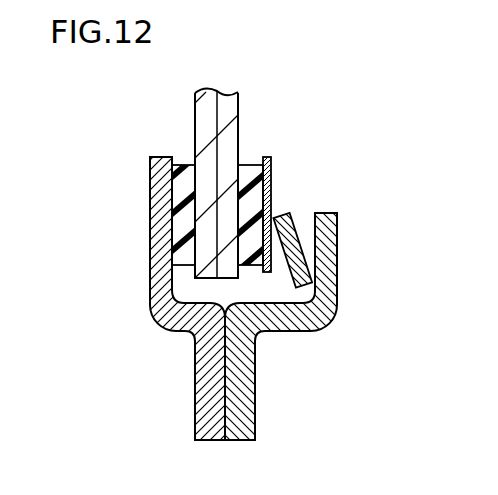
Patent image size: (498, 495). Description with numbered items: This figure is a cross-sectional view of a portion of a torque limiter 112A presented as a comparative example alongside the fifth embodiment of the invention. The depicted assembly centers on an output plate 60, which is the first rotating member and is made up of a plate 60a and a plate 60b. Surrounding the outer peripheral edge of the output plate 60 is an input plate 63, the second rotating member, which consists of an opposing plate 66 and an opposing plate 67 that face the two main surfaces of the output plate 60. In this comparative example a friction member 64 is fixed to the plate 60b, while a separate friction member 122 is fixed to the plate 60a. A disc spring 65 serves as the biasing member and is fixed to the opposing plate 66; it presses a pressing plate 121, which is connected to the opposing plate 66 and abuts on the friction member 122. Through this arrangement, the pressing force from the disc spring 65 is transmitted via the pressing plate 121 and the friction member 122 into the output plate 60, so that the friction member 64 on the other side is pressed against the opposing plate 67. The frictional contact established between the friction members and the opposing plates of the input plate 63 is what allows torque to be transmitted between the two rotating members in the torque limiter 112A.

The torque limiter 112A is at (307, 108).
The output plate 60 is at (124, 90).
The plate 60a is at (230, 142).
The plate 60b is at (205, 108).
The input plate 63 is at (307, 357).
The friction member 64 is at (182, 215).
The disc spring 65 is at (292, 247).
The opposing plate 66 is at (237, 375).
The opposing plate 67 is at (212, 408).
The pressing plate 121 is at (262, 200).
The friction member 122 is at (245, 177).